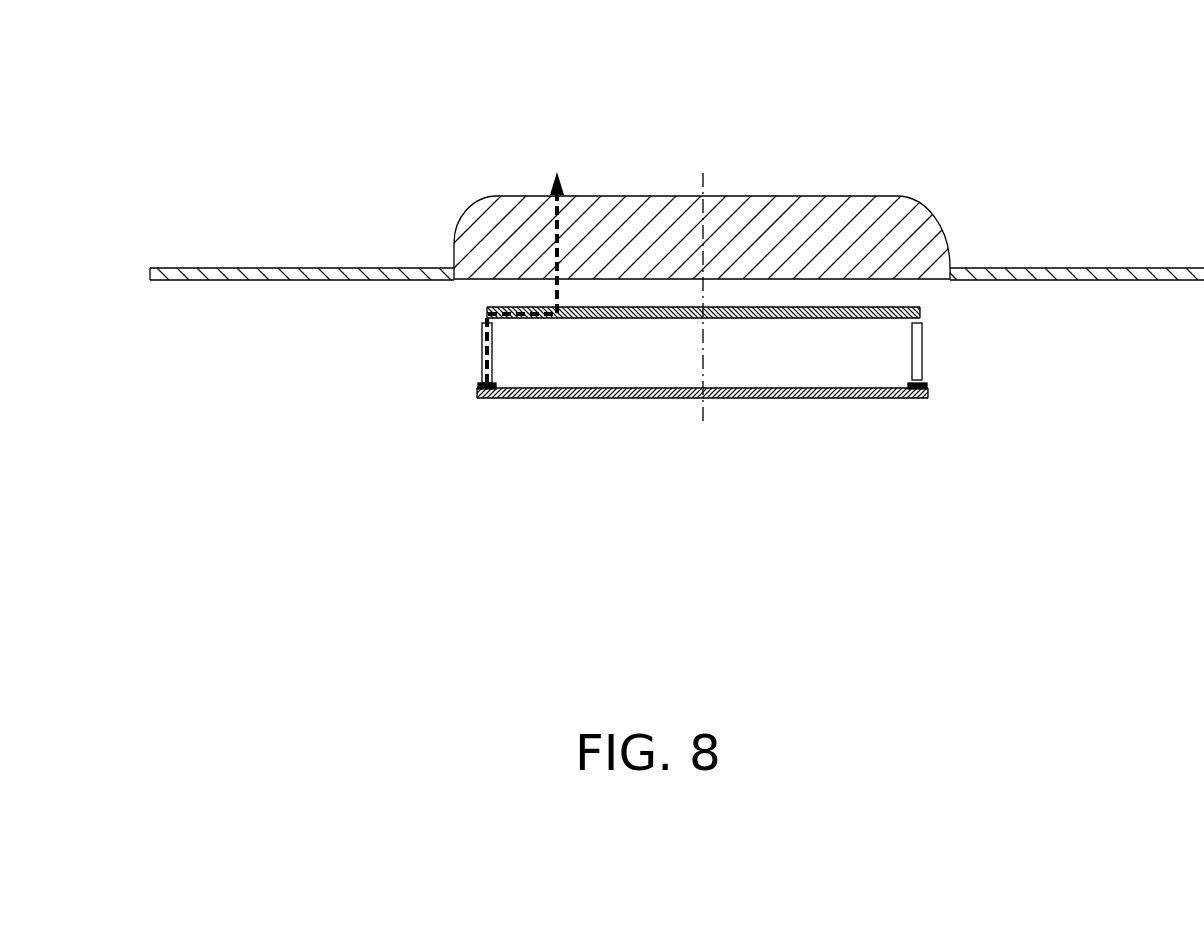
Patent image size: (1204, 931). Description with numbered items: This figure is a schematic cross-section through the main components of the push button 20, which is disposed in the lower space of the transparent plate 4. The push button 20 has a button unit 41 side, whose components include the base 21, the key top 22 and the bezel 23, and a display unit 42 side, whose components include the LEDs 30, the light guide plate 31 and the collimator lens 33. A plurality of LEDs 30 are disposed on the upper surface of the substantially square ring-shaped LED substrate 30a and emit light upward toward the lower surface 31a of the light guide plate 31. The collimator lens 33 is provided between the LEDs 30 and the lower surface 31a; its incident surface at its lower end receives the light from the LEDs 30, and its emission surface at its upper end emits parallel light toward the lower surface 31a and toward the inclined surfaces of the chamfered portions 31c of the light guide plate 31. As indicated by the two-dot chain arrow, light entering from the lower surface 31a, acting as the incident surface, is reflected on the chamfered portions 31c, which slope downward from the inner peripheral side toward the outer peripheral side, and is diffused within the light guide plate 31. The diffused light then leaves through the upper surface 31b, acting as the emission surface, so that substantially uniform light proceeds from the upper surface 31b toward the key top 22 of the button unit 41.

The transparent plate 4 is at (218, 272).
The push button 20 is at (489, 147).
The base 21 is at (741, 207).
The key top 22 is at (700, 234).
The bezel 23 is at (700, 234).
The button unit 41 is at (858, 184).
The display unit 42 is at (850, 423).
The LED 30 is at (705, 422).
The LED substrate 30a is at (738, 402).
The light guide plate 31 is at (482, 304).
The lower surface 31a is at (820, 320).
The upper surface 31b is at (883, 305).
The chamfered portion 31c is at (485, 310).
The collimator lens 33 is at (483, 348).